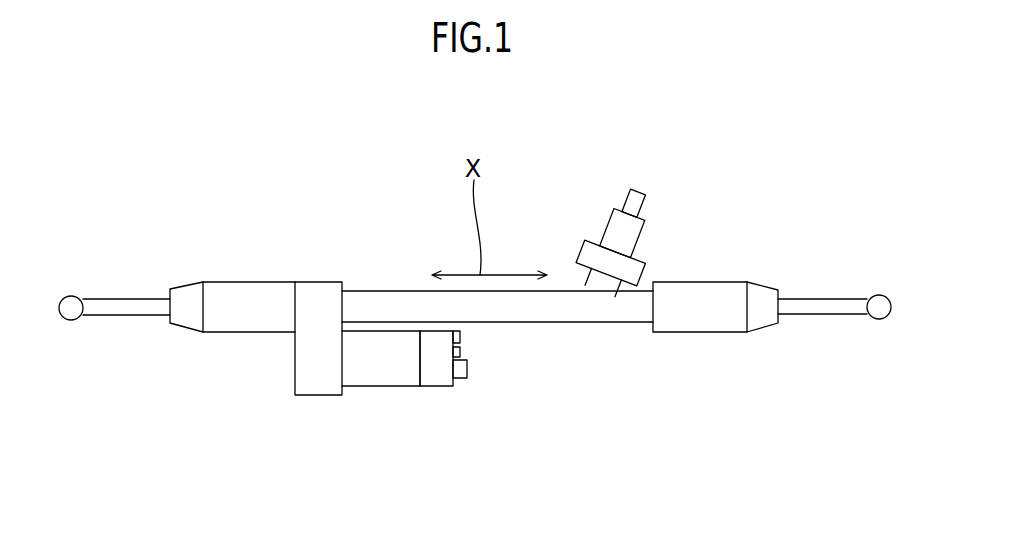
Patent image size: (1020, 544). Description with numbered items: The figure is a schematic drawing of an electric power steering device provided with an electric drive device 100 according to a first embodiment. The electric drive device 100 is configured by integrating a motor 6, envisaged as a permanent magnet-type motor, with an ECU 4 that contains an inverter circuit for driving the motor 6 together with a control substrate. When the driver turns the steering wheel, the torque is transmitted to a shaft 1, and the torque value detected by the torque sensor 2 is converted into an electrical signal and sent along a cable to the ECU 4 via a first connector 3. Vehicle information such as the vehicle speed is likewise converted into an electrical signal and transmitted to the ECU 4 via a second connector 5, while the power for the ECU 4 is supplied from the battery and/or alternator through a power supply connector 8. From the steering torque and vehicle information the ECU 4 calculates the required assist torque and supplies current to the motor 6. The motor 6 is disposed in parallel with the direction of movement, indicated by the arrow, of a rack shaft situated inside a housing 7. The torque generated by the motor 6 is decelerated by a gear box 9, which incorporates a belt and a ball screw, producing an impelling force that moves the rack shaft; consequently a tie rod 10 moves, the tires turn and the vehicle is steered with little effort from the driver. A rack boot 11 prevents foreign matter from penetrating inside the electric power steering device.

The shaft 1 is at (635, 190).
The torque sensor 2 is at (580, 250).
The first connector 3 is at (460, 338).
The ECU 4 is at (445, 387).
The second connector 5 is at (460, 352).
The motor 6 is at (373, 387).
The housing 7 is at (388, 291).
The power supply connector 8 is at (467, 370).
The gear box 9 is at (314, 282).
The tie rod 10 is at (106, 316).
The rack boot 11 is at (733, 282).
The electric drive device 100 is at (421, 424).